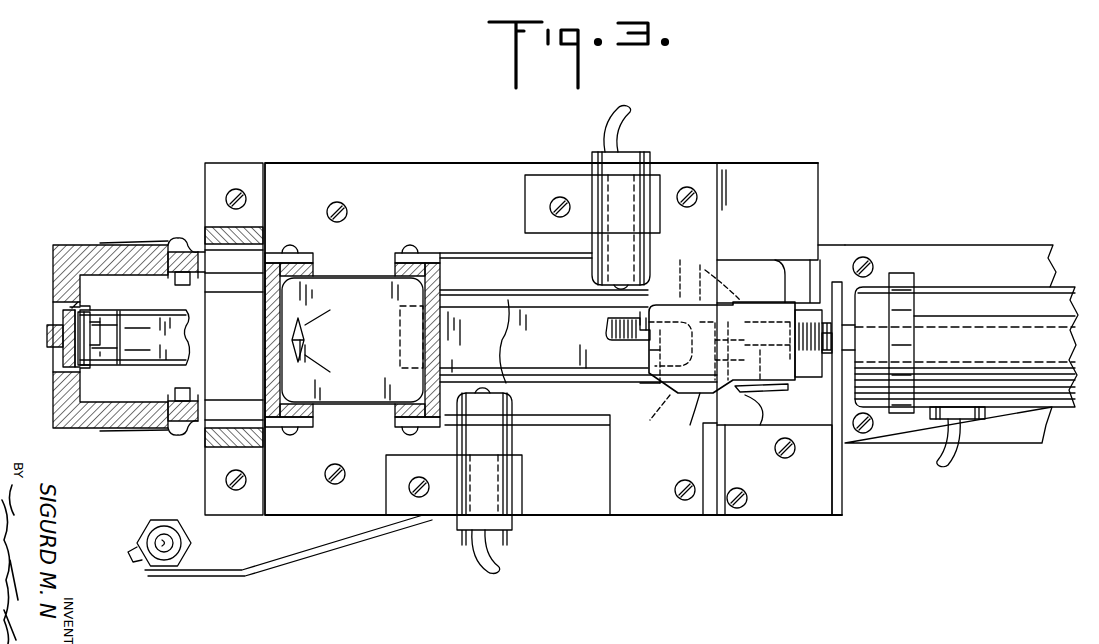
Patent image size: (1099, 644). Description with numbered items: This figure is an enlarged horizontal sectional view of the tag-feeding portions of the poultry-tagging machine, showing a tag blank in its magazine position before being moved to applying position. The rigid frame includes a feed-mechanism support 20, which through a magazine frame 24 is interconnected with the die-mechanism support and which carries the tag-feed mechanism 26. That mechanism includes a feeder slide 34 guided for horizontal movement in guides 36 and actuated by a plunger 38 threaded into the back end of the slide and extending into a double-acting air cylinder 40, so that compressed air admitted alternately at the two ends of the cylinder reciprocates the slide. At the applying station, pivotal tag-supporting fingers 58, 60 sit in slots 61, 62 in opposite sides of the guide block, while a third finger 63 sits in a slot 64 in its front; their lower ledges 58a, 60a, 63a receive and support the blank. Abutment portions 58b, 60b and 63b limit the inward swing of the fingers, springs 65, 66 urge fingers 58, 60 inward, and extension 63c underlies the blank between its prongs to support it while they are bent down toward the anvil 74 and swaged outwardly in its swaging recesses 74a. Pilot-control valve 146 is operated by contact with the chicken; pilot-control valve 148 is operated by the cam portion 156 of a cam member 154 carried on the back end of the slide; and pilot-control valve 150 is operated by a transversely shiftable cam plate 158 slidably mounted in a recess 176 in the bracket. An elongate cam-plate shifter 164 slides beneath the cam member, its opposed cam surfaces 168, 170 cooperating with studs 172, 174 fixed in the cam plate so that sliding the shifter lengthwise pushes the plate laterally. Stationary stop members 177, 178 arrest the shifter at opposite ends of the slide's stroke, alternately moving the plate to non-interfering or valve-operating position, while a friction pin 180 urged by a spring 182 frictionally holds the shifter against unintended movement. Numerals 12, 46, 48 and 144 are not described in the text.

The lens mount housing 12 is at (53, 372).
The feed-mechanism support 20 is at (566, 516).
The magazine frame 24 is at (308, 258).
The tag-feed mechanism 26 is at (755, 284).
The feeder slide 34 is at (549, 342).
The guides 36 is at (506, 332).
The plunger 38 is at (850, 337).
The double-acting air cylinder 40 is at (960, 356).
The upper housing block 46 is at (82, 248).
The lower housing block 48 is at (82, 428).
The pivotal tag-supporting finger 58 is at (170, 240).
The ledge 58a is at (208, 259).
The abutment portion 58b is at (182, 285).
The pivotal tag-supporting finger 60 is at (178, 434).
The ledge 60a is at (192, 422).
The abutment portion 60b is at (193, 388).
The recess or slot 61 is at (198, 252).
The recess or slot 62 is at (208, 440).
The pivotal tag-supporting finger 63 is at (64, 352).
The ledge 63a is at (92, 320).
The abutment portions 63b is at (70, 302).
The extension 63c is at (120, 322).
The slot or recess 64 is at (78, 304).
The spring 65 is at (150, 243).
The spring 66 is at (150, 431).
The anvil 74 is at (142, 362).
The swaging recesses 74a is at (118, 348).
The plunger fitting 144 is at (808, 380).
The pilot-control valve 146 is at (160, 543).
The pilot-control valve 148 is at (486, 414).
The pilot-control valve 150 is at (640, 238).
The cam member 154 is at (720, 395).
The cam portion 156 is at (689, 421).
The cam plate 158 is at (720, 303).
The cam-plate shifter 164 is at (606, 322).
The cam surface 168 is at (702, 276).
The cam surface 170 is at (652, 350).
The stud 172 is at (767, 211).
The stud 174 is at (645, 382).
The recess 176 is at (649, 415).
The stationary stop member 177 is at (836, 282).
The stationary stop member 178 is at (440, 300).
The snubbing or friction pin 180 is at (753, 418).
The spring 182 is at (745, 392).